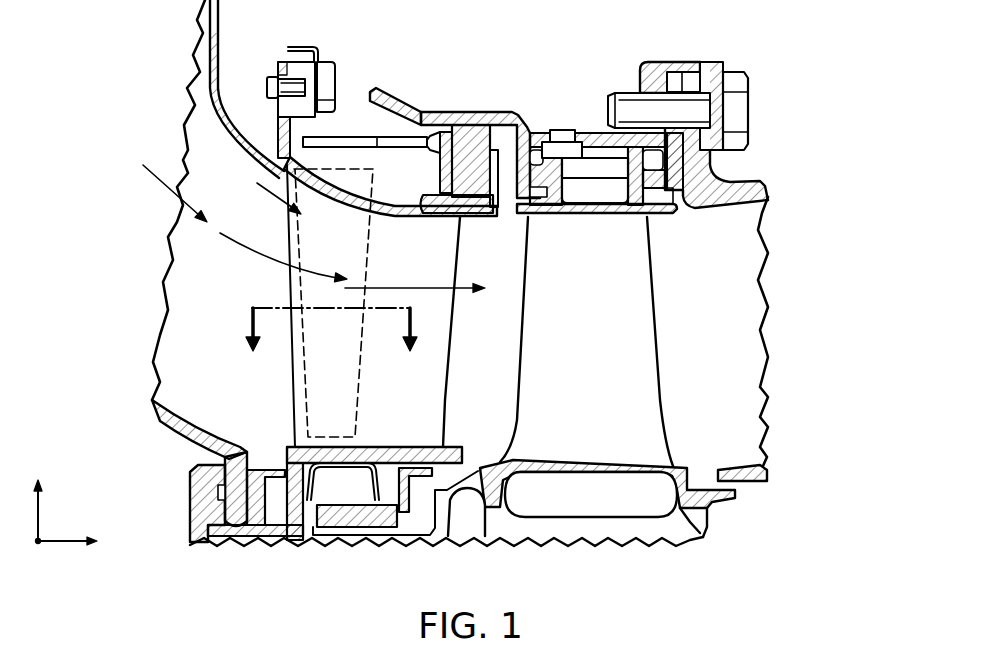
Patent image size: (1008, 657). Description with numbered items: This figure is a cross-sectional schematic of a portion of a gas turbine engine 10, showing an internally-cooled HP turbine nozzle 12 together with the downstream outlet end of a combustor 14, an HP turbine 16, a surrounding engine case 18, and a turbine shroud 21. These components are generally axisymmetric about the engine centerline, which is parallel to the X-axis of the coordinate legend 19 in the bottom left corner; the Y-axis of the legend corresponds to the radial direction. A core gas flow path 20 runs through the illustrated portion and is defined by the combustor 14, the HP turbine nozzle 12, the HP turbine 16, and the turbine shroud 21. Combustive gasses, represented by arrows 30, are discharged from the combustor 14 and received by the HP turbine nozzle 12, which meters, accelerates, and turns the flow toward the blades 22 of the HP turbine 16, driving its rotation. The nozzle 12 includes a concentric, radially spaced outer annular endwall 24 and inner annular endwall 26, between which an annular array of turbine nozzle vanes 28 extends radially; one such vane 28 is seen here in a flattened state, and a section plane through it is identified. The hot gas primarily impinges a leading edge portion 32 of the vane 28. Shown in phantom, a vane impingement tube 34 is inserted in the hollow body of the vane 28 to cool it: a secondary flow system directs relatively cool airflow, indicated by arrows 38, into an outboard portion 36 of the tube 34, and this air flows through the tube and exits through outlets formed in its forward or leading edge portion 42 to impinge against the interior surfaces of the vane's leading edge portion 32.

The gas turbine engine 10 is at (163, 79).
The HP turbine nozzle 12 is at (436, 357).
The combustor 14 is at (174, 342).
The HP turbine 16 is at (692, 544).
The engine case 18 is at (483, 114).
The coordinate legend 19 is at (39, 518).
The core gas flow path 20 is at (721, 409).
The turbine shroud 21 is at (668, 217).
The blades 22 is at (647, 327).
The outer annular endwall 24 is at (397, 210).
The inner annular endwall 26 is at (377, 447).
The turbine nozzle vane 28 is at (446, 322).
The arrows 30 is at (178, 205).
The leading edge portion 32 is at (293, 413).
The vane impingement tube 34 is at (284, 193).
The outboard portion 36 is at (360, 197).
The arrows 38 is at (357, 40).
The leading edge portion 42 is at (310, 290).